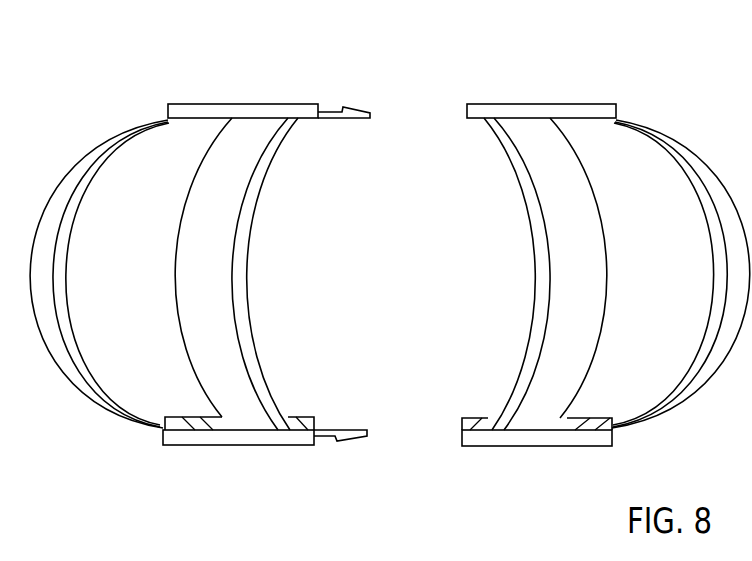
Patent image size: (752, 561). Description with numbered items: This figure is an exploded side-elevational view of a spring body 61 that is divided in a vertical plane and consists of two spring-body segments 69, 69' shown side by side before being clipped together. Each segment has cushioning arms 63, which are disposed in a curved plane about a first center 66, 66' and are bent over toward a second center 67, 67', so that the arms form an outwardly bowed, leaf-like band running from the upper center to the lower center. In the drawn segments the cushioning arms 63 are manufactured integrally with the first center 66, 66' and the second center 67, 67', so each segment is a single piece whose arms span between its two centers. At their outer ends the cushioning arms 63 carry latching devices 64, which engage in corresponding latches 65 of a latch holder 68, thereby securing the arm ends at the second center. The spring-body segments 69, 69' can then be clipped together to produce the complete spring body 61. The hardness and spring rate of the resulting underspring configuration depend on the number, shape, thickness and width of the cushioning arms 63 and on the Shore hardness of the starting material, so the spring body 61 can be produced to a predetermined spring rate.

The spring body 61 is at (393, 80).
The cushioning arms 63 is at (46, 268).
The latching devices 64 is at (479, 418).
The latches 65 is at (177, 417).
The first center 66 is at (269, 65).
The first center 66' is at (541, 65).
The second center 67 is at (265, 485).
The second center 67' is at (537, 485).
The latch holder 68 is at (310, 415).
The spring-body segment 69 is at (298, 53).
The spring-body segment 69' is at (499, 53).